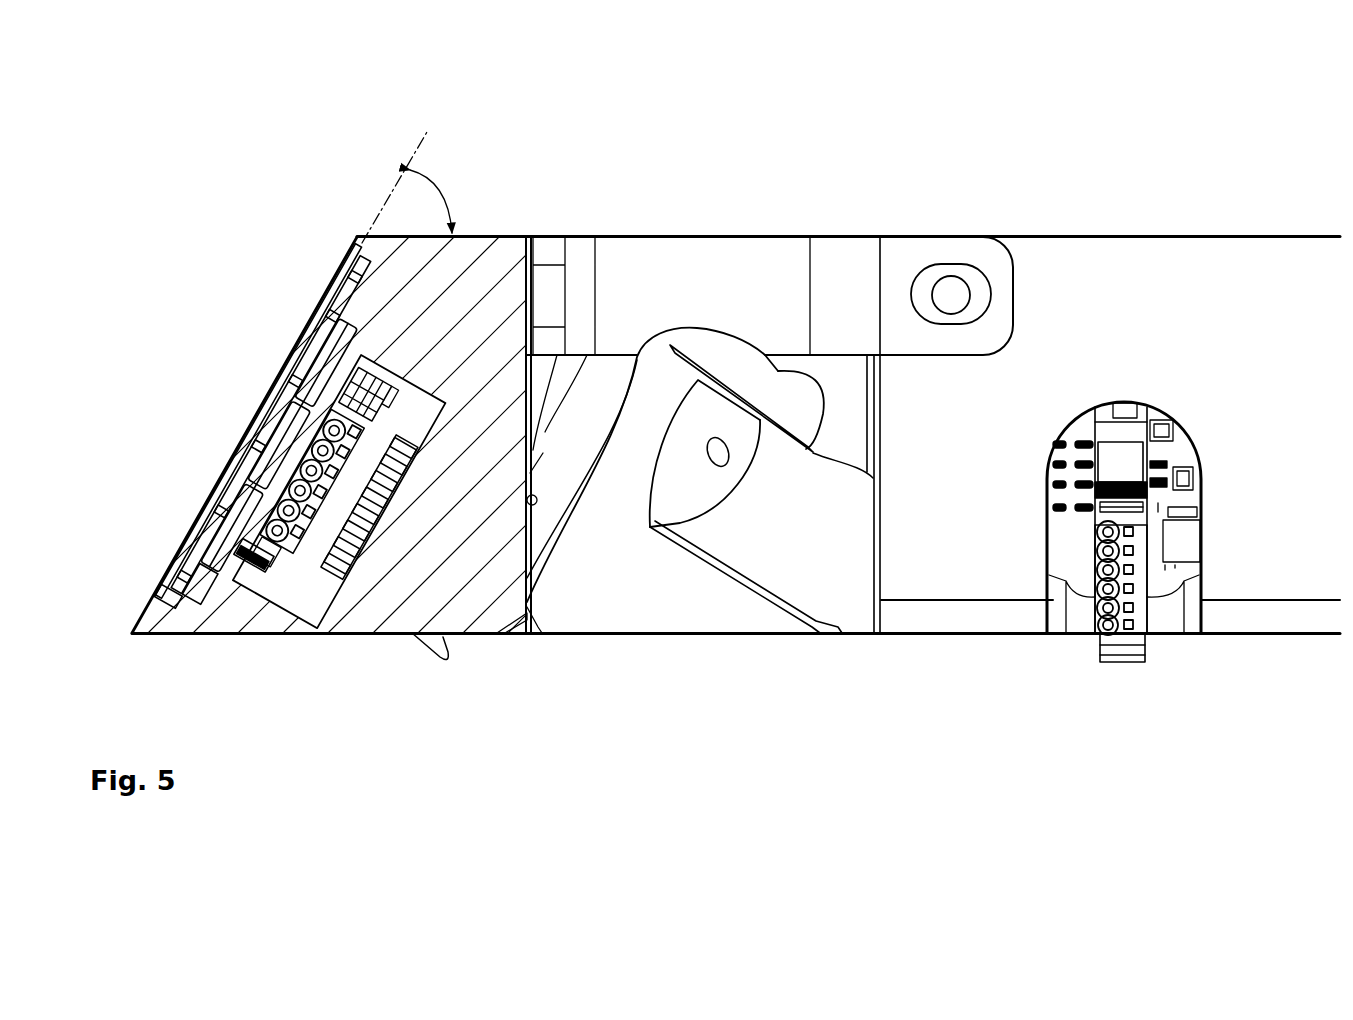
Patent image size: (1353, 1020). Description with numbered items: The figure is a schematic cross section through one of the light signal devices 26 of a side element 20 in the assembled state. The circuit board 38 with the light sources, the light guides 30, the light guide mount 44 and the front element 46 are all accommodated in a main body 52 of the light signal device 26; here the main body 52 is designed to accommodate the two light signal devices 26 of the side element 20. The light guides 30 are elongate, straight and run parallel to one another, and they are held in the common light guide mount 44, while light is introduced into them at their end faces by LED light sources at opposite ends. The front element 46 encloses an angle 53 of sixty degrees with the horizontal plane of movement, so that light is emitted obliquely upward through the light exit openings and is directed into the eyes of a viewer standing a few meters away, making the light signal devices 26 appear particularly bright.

The side element 20 is at (497, 193).
The light signal device 26 is at (190, 287).
The light guide 30 is at (313, 383).
The circuit board 38 is at (245, 537).
The light guide mount 44 is at (207, 567).
The front element 46 is at (317, 307).
The main body 52 is at (458, 603).
The angle 53 is at (407, 187).